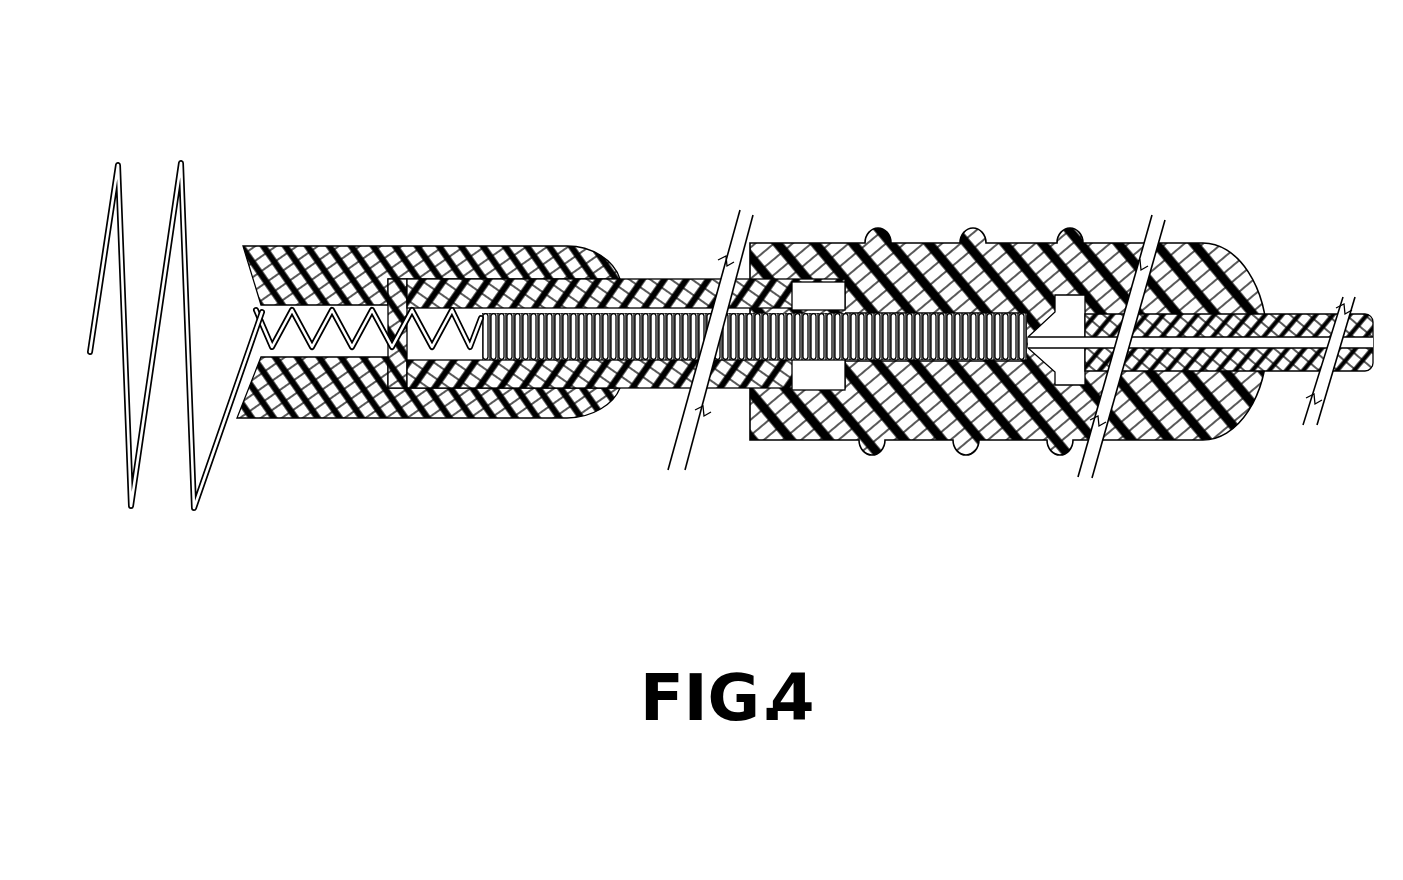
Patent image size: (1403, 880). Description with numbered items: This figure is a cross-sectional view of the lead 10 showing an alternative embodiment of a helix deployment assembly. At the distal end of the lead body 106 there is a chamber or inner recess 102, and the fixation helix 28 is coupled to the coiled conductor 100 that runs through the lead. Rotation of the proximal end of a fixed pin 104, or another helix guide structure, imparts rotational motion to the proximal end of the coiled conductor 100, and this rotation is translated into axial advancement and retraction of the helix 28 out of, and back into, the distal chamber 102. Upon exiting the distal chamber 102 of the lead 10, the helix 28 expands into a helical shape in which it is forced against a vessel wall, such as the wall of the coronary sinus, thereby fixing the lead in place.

The lead 10 is at (930, 181).
The fixation helix 28 is at (208, 468).
The coiled conductor 100 is at (653, 287).
The chamber 102 is at (300, 347).
The fixed pin 104 is at (1293, 327).
The lead body 106 is at (340, 268).